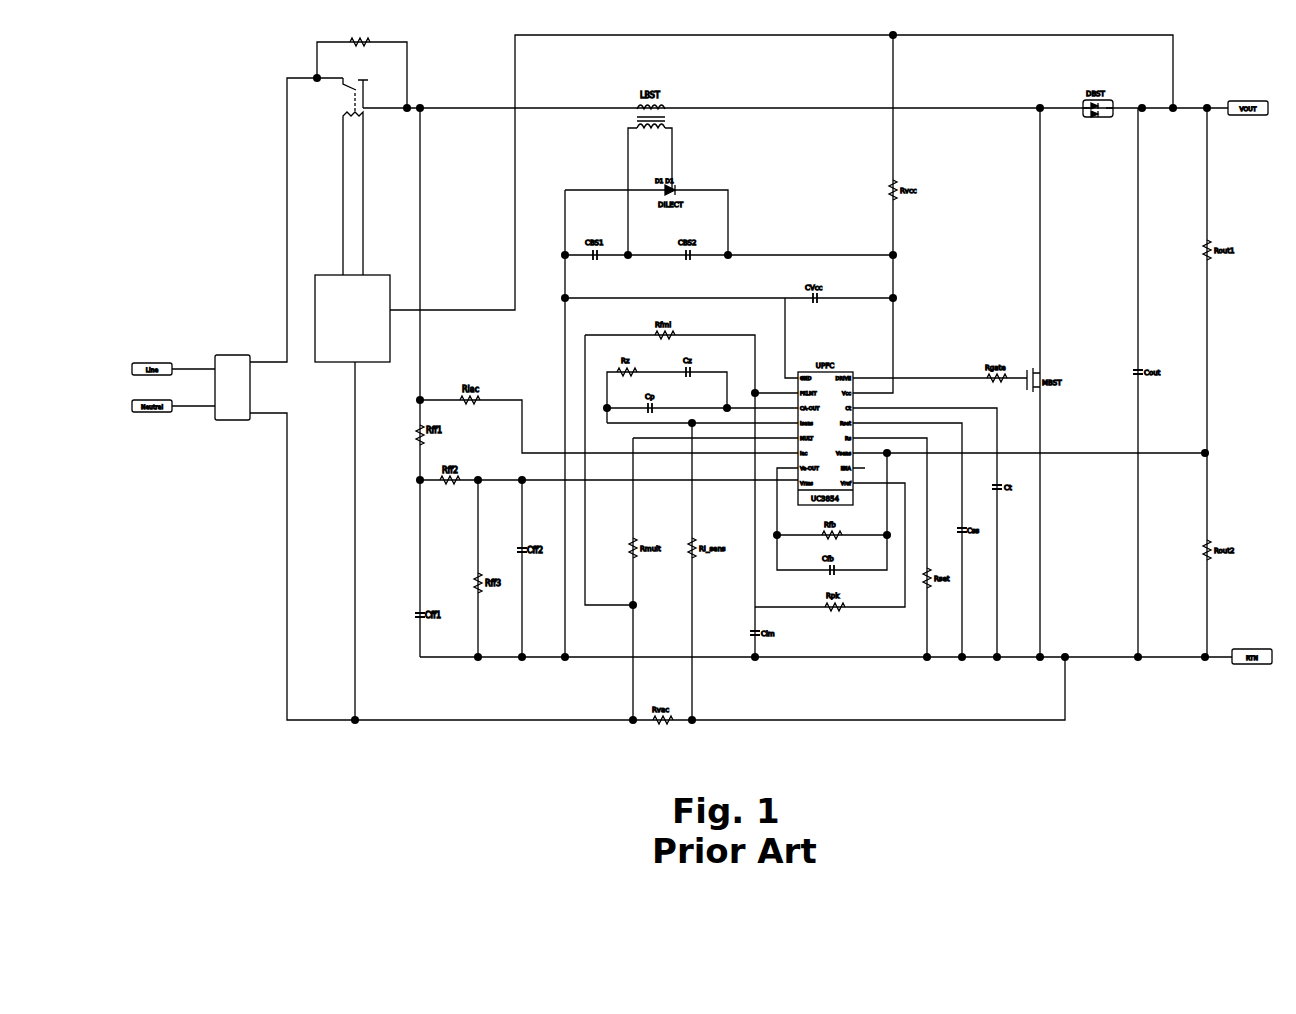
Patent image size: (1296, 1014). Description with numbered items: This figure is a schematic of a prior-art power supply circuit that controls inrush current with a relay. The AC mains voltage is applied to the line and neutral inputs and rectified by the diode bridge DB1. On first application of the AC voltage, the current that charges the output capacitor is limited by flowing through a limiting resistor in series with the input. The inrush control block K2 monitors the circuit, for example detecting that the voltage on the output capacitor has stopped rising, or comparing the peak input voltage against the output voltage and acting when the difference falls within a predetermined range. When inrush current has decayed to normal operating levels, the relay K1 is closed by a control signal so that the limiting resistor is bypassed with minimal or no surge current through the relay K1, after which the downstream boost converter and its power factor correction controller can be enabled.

The relay K1 is at (340, 103).
The inrush control block K2 is at (373, 275).
The diode bridge DB1 is at (222, 422).